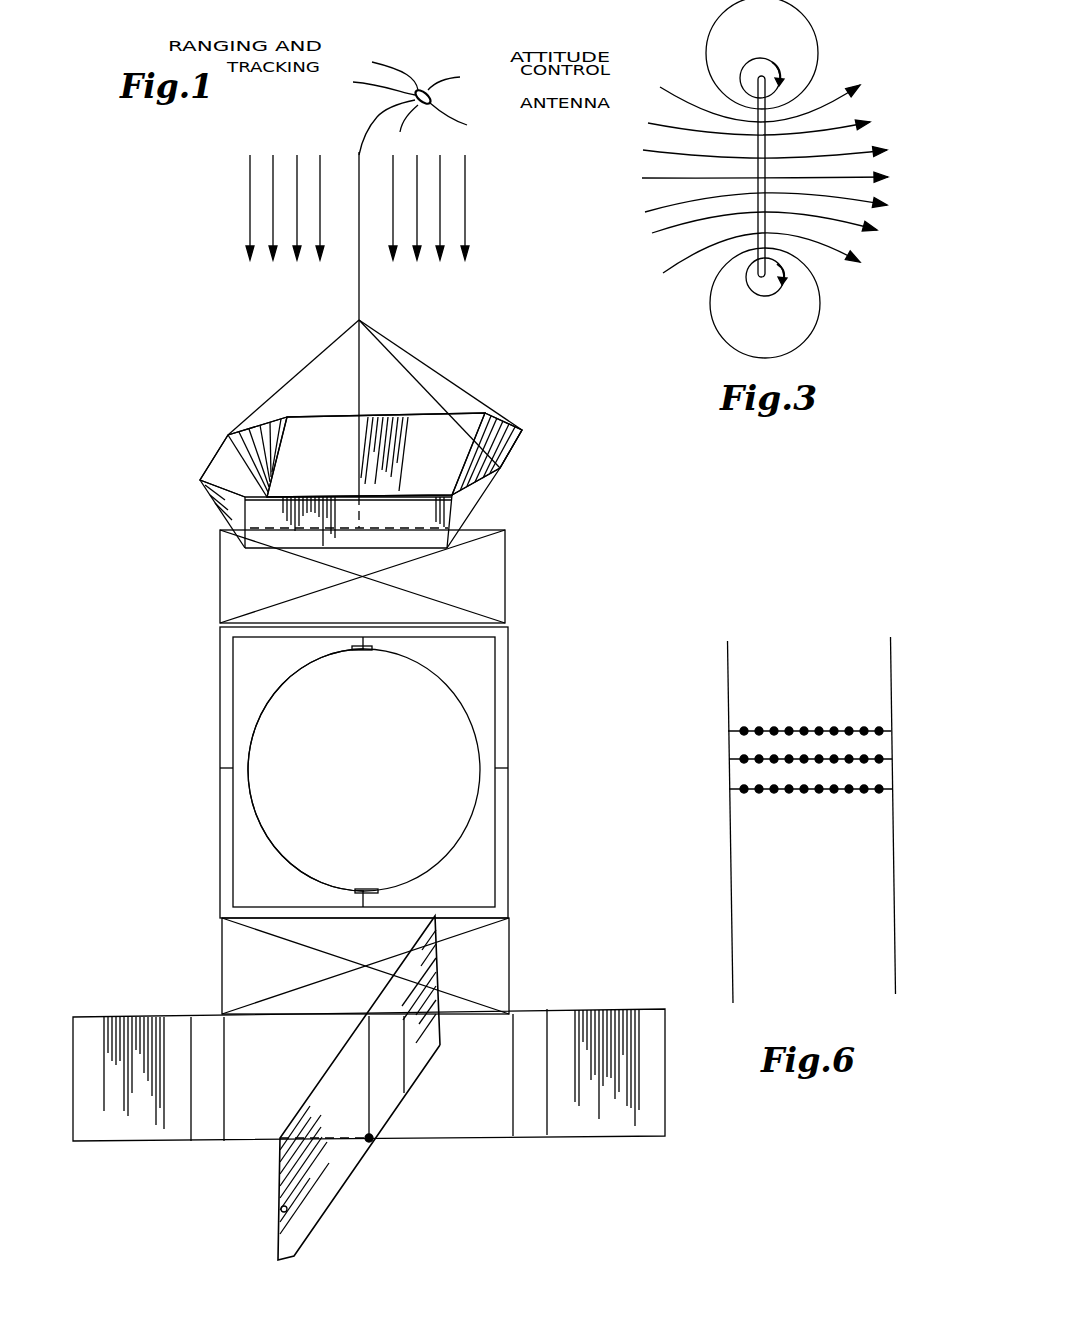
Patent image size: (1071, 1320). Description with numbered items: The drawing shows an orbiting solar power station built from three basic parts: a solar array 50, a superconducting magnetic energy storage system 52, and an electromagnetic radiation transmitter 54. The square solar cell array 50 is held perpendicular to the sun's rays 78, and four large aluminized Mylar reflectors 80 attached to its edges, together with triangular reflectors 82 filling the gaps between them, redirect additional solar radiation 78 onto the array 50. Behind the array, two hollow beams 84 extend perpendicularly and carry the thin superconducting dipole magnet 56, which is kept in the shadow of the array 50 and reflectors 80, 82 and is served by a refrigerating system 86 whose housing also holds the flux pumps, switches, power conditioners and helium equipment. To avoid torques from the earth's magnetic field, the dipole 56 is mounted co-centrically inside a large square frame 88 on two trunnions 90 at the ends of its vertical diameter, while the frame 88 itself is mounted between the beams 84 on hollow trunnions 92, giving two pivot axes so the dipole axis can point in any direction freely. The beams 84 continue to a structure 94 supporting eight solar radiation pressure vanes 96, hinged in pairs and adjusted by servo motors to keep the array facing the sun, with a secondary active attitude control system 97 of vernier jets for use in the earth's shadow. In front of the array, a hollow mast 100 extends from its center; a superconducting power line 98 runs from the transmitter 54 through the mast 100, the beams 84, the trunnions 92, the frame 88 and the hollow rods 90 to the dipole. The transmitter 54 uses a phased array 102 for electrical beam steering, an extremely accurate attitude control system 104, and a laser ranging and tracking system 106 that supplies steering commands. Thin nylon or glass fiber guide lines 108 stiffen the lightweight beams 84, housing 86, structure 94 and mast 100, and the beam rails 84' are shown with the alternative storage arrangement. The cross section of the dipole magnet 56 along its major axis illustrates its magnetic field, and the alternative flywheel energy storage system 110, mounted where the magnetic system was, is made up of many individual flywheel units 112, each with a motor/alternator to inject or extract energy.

In FIG. 1, the solar array 50 is at (258, 542).
In FIG. 1, the superconducting magnetic energy storage system 52 is at (470, 718).
In FIG. 1, the electromagnetic radiation transmitter 54 is at (377, 69).
In FIG. 1, the dipole magnet 56 is at (267, 705).
In FIG. 3, the dipole magnet 56 is at (770, 116).
In FIG. 1, the sun's rays 78 is at (250, 208).
In FIG. 1, the reflectors 80 is at (222, 450).
In FIG. 1, the triangular reflectors 82 is at (263, 423).
In FIG. 1, the beams 84 is at (359, 772).
In FIG. 6, the frame rails 84' is at (807, 804).
In FIG. 1, the refrigerating system 86 is at (366, 652).
In FIG. 1, the square frame 88 is at (233, 703).
In FIG. 1, the trunnions 90 is at (372, 643).
In FIG. 1, the hollow trunnions 92 is at (220, 777).
In FIG. 1, the structure 94 is at (469, 1016).
In FIG. 1, the solar radiation pressure vanes 96 is at (438, 962).
In FIG. 1, the secondary active attitude control system 97 is at (373, 1142).
In FIG. 1, the superconducting power line 98 is at (375, 118).
In FIG. 1, the hollow mast 100 is at (360, 288).
In FIG. 1, the phased array 102 is at (432, 98).
In FIG. 1, the attitude control system 104 is at (449, 108).
In FIG. 1, the laser ranging and tracking system 106 is at (410, 106).
In FIG. 1, the guide lines 108 is at (442, 368).
In FIG. 6, the flywheel energy storage system 110 is at (870, 731).
In FIG. 6, the flywheel unit 112 is at (772, 731).